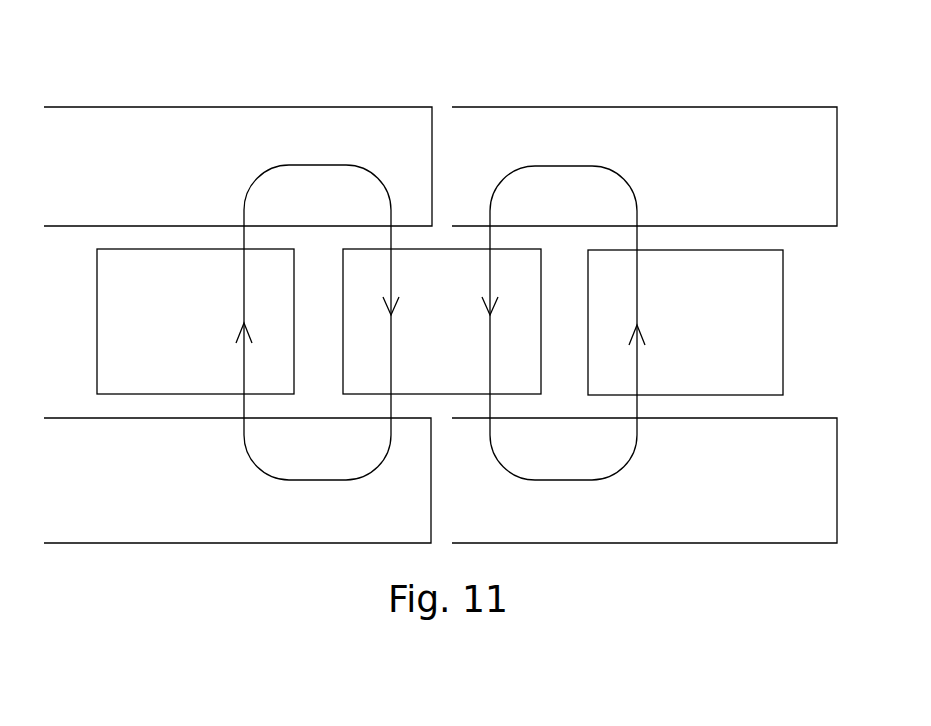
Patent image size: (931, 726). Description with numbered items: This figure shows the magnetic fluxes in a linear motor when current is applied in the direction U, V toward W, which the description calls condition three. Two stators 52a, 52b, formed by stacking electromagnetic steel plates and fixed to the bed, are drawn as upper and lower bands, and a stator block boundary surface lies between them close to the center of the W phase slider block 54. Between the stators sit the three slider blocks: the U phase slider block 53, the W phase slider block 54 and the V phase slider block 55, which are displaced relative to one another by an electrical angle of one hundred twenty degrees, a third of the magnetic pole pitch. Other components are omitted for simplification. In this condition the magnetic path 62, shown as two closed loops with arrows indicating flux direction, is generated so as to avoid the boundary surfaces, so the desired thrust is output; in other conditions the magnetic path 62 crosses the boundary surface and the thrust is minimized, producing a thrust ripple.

The stator 52a is at (718, 510).
The stator 52b is at (773, 193).
The U phase slider block 53 is at (202, 277).
The W phase slider block 54 is at (436, 275).
The V phase slider block 55 is at (659, 298).
The magnetic path 62 is at (318, 165).